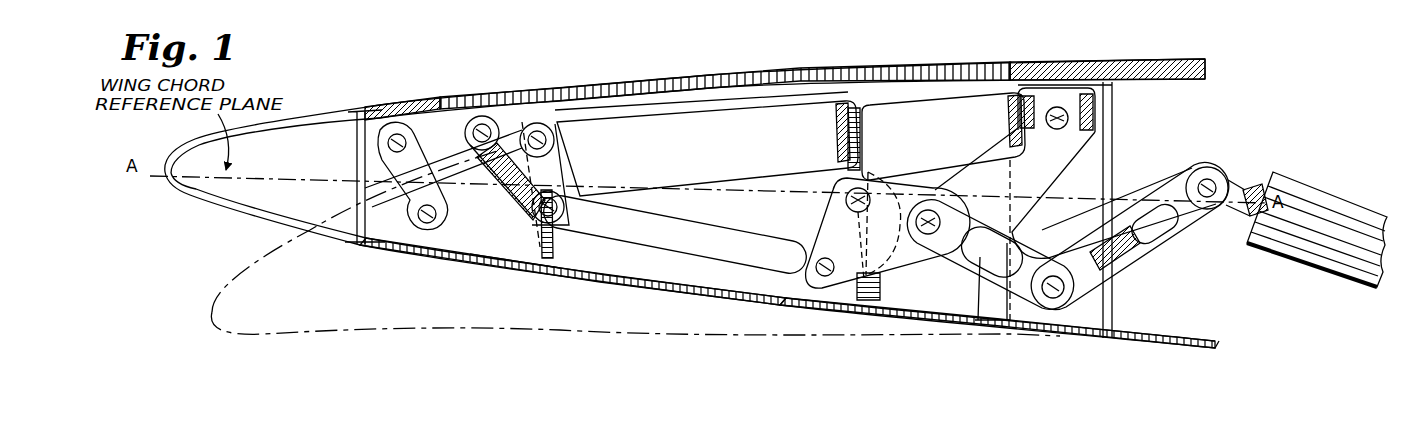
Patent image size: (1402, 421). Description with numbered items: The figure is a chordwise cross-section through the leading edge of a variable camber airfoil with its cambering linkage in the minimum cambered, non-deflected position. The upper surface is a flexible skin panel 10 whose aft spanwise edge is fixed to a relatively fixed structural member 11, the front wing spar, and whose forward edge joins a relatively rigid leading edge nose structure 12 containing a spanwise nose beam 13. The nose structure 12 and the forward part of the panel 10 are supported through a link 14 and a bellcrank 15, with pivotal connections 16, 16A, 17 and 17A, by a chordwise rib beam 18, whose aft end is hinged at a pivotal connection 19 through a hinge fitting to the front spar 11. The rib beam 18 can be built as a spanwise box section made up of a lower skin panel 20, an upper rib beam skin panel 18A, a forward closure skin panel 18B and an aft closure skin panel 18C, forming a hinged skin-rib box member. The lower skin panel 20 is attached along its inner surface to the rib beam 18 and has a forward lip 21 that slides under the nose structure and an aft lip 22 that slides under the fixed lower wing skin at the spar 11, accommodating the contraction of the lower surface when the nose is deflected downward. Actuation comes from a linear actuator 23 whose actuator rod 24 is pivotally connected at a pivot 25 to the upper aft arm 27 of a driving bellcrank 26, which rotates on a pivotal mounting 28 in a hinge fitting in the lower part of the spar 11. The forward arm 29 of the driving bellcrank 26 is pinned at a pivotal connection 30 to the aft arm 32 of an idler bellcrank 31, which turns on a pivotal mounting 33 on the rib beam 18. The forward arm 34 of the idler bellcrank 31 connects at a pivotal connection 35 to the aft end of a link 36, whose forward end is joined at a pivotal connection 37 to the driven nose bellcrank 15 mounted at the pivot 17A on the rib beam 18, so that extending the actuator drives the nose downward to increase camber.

The flexible skin panel 10 is at (648, 79).
The fixed structural member 11 is at (1115, 131).
The leading edge nose structure 12 is at (203, 207).
The nose beam 13 is at (357, 121).
The link 14 is at (376, 177).
The bellcrank 15 is at (506, 203).
The pivotal connection 16 is at (388, 145).
The pivotal connection 16A is at (417, 216).
The pivotal connection 17 is at (499, 166).
The pivotal connection 17A is at (560, 150).
The chordwise rib beam 18 is at (731, 108).
The upper rib beam skin panel 18A is at (776, 97).
The forward closure skin panel 18B is at (495, 271).
The aft closure skin panel 18C is at (880, 130).
The pivotal connection 19 is at (1060, 108).
The lower skin panel 20 is at (520, 286).
The forward lip 21 is at (362, 249).
The aft lip 22 is at (1060, 338).
The linear actuator 23 is at (1300, 177).
The actuator rod 24 is at (1257, 190).
The pivotal connection 25 is at (1210, 177).
The driving bellcrank 26 is at (1040, 240).
The upper aft arm 27 is at (1165, 242).
The pivotal mounting 28 is at (1066, 291).
The forward arm 29 is at (957, 268).
The pivotal connection 30 is at (930, 212).
The idler bellcrank 31 is at (812, 214).
The aft arm 32 is at (911, 197).
The pivotal mounting 33 is at (862, 192).
The forward arm 34 is at (820, 232).
The pivotal connection 35 is at (818, 275).
The link 36 is at (668, 208).
The pivotal connection 37 is at (540, 250).